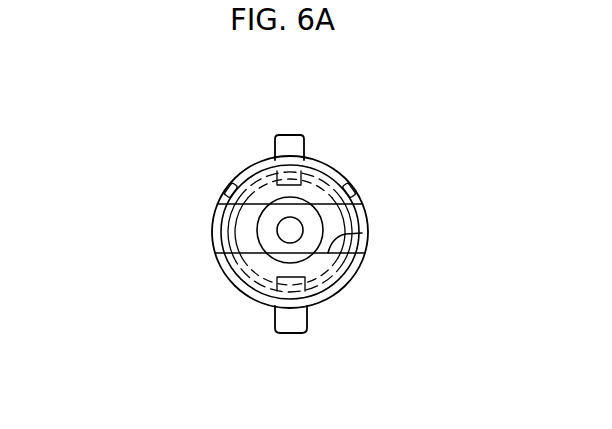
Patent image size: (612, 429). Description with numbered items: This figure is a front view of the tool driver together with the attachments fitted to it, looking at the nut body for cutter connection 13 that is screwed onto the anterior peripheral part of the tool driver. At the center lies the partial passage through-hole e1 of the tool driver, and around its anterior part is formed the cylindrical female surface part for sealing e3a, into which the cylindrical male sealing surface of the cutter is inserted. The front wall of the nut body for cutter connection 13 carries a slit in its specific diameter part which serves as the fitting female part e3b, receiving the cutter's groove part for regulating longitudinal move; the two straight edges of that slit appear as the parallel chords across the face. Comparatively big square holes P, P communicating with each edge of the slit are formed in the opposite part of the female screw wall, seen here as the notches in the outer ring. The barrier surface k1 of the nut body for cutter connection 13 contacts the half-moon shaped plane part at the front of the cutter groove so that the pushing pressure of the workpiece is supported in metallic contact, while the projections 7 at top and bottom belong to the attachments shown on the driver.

The terminal pin 7 is at (290, 147).
The nut body for cutter connection 13 is at (333, 171).
The barrier surface k1 is at (258, 185).
The square hole P is at (222, 196).
The partial passage through-hole e1 is at (284, 231).
The cylindrical female surface part for sealing e3a is at (257, 222).
The fitting female part e3b is at (362, 233).